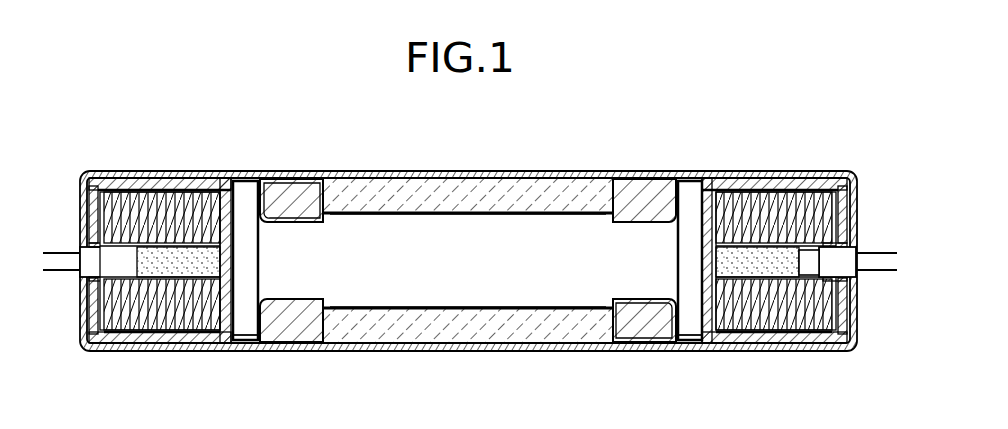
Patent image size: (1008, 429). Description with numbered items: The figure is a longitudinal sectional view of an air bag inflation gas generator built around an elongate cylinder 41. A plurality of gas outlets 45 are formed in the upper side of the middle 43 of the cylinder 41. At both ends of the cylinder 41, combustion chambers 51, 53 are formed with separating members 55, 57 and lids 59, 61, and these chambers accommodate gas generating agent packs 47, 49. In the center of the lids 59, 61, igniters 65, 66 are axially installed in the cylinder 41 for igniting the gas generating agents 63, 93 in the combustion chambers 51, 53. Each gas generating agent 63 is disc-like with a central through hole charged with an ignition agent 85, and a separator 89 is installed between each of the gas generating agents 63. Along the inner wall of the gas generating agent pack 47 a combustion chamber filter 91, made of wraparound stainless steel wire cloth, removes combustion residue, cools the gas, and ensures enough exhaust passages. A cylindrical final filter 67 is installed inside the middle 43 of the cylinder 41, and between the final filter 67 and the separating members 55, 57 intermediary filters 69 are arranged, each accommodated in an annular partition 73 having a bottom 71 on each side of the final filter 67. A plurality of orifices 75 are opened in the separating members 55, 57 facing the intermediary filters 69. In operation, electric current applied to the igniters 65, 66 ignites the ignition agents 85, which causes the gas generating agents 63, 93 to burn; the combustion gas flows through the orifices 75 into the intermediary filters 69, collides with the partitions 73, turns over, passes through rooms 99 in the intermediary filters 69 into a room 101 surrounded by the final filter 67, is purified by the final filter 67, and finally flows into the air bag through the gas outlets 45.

The elongate cylinder 41 is at (583, 170).
The middle of the cylinder 43 is at (408, 166).
The gas outlets 45 is at (425, 172).
The gas generating agent pack 47 is at (764, 178).
The gas generating agent pack 49 is at (112, 180).
The combustion chamber 51 is at (726, 178).
The combustion chamber 53 is at (177, 180).
The separating member 55 is at (576, 223).
The separating member 57 is at (252, 210).
The lid 59 is at (858, 240).
The lid 61 is at (78, 300).
The gas generating agent 63 is at (727, 318).
The igniter 65 is at (856, 236).
The igniter 66 is at (76, 240).
The final filter 67 is at (392, 327).
The intermediary filter 69 is at (303, 330).
The bottom 71 is at (340, 318).
The annular partition 73 is at (259, 328).
The orifice 75 is at (225, 172).
The ignition agent 85 is at (197, 265).
The separator 89 is at (137, 200).
The combustion chamber filter 91 is at (148, 330).
The gas generating agent 93 is at (120, 326).
The room 99 is at (290, 243).
The room 101 is at (473, 290).